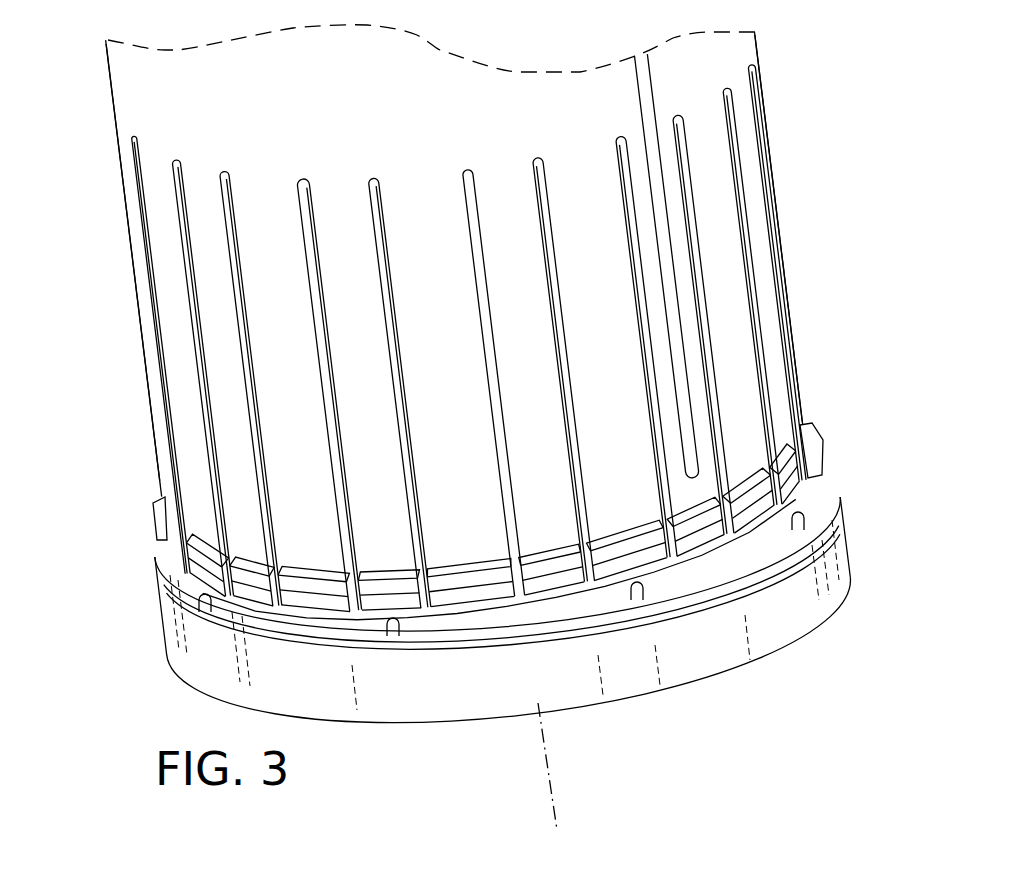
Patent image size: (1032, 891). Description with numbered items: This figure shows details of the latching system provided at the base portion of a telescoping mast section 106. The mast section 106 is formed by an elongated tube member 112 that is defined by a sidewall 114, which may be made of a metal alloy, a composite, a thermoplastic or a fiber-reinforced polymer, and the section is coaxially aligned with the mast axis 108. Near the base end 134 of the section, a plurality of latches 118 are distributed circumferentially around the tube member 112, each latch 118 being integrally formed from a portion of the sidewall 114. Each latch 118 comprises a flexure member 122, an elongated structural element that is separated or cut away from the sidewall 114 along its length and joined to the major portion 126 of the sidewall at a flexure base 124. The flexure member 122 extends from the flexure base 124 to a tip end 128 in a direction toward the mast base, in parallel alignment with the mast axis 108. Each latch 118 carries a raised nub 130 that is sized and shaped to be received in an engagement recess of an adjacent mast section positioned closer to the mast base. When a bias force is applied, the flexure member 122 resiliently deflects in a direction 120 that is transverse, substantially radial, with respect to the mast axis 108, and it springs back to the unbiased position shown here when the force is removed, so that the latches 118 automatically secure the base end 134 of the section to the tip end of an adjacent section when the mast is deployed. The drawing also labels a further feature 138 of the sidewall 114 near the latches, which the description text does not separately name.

The mast section 106 is at (810, 148).
The mast axis 108 is at (563, 792).
The tube member 112 is at (92, 112).
The sidewall 114 is at (368, 97).
The latch 118 is at (277, 447).
The direction 120 is at (803, 405).
The flexure member 122 is at (285, 348).
The flexure base 124 is at (157, 178).
The major portion 126 is at (290, 67).
The tip end 128 is at (297, 620).
The raised nub 130 is at (590, 570).
The base end 134 is at (807, 590).
The top slot 138 is at (660, 238).